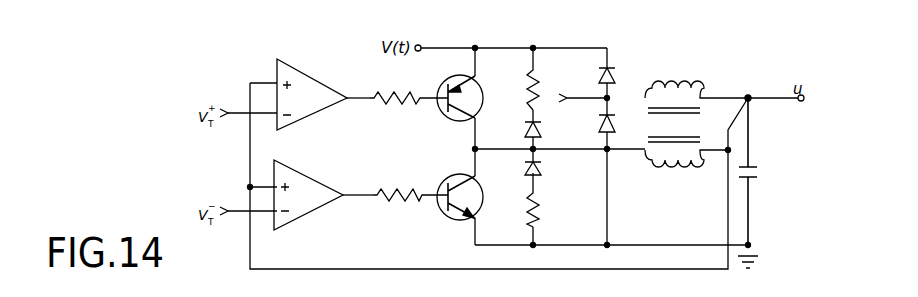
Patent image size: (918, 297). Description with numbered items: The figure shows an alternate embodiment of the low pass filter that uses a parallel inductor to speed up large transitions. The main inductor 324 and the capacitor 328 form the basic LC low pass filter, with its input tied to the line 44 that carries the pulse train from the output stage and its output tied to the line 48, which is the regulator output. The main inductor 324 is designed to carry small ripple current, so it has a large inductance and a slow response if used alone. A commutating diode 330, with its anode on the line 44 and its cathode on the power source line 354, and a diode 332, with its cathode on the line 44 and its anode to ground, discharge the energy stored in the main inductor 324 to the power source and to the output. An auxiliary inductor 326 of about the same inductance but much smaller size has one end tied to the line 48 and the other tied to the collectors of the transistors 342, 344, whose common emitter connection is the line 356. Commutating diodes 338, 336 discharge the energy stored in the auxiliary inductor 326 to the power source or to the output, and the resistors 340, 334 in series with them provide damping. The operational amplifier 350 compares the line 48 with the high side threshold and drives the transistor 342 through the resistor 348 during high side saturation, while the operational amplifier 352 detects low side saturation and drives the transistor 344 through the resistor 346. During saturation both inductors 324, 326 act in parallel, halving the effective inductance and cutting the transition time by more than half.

The line 44 is at (590, 96).
The line 48 is at (748, 94).
The main inductor 324 is at (670, 89).
The auxiliary inductor 326 is at (658, 161).
The capacitor 328 is at (757, 174).
The commutating diode 330 is at (613, 72).
The diode 332 is at (615, 125).
The resistor 334 is at (540, 207).
The commutating diode 336 is at (541, 168).
The commutating diode 338 is at (541, 129).
The resistor 340 is at (531, 98).
The transistor 342 is at (458, 121).
The transistor 344 is at (456, 219).
The resistor 346 is at (389, 201).
The resistor 348 is at (402, 104).
The operational amplifier 350 is at (335, 65).
The operational amplifier 352 is at (299, 218).
The line 354 is at (502, 48).
The common line 356 is at (530, 144).